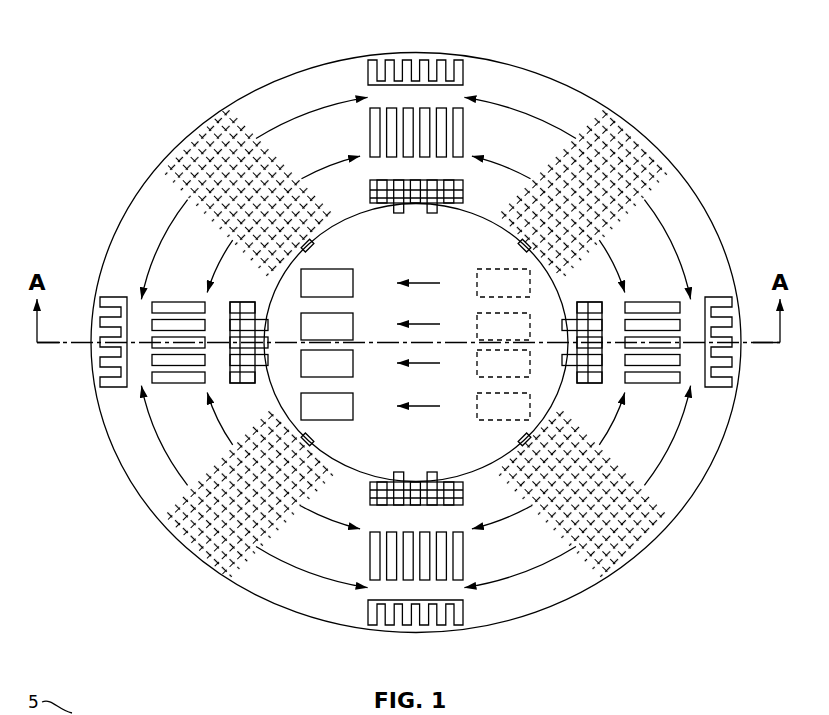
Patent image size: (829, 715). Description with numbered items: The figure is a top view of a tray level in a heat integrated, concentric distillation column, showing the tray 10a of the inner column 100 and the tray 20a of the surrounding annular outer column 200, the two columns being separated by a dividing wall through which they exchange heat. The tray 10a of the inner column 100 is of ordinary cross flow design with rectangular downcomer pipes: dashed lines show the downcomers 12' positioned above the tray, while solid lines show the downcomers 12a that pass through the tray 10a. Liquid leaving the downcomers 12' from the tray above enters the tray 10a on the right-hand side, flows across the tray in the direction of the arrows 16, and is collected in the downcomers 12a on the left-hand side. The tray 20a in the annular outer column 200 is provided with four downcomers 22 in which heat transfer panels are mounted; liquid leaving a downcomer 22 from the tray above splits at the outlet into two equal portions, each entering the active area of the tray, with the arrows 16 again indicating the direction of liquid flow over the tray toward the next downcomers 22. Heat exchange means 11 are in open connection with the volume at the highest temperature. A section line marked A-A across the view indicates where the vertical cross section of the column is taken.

The downcomer 22 is at (458, 62).
The arrows 16 is at (417, 282).
The tray 10a is at (468, 238).
The tray 20a is at (690, 208).
The annular outer column 200 is at (133, 197).
The inner column 100 is at (270, 288).
The heat exchange means 11 is at (434, 219).
The downcomers 12a is at (348, 416).
The downcomers 12' is at (503, 344).